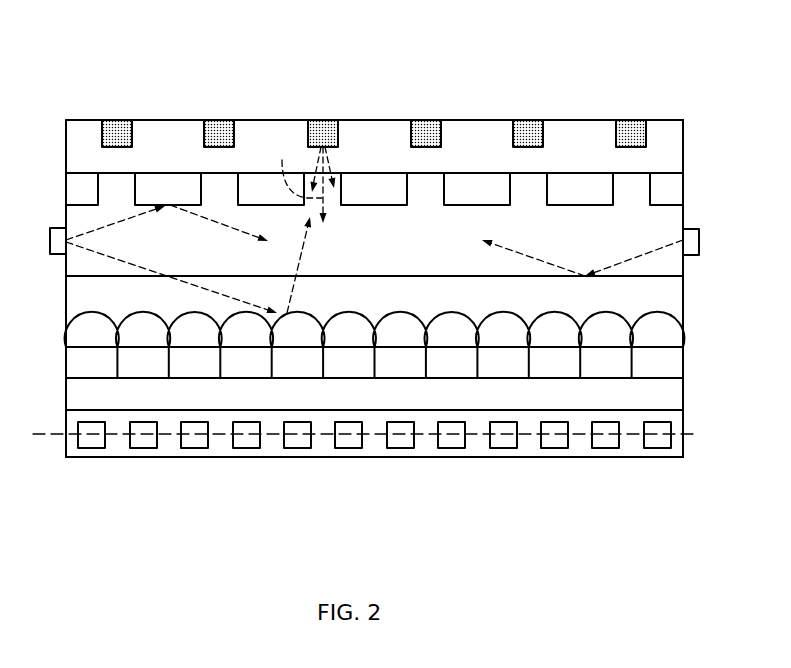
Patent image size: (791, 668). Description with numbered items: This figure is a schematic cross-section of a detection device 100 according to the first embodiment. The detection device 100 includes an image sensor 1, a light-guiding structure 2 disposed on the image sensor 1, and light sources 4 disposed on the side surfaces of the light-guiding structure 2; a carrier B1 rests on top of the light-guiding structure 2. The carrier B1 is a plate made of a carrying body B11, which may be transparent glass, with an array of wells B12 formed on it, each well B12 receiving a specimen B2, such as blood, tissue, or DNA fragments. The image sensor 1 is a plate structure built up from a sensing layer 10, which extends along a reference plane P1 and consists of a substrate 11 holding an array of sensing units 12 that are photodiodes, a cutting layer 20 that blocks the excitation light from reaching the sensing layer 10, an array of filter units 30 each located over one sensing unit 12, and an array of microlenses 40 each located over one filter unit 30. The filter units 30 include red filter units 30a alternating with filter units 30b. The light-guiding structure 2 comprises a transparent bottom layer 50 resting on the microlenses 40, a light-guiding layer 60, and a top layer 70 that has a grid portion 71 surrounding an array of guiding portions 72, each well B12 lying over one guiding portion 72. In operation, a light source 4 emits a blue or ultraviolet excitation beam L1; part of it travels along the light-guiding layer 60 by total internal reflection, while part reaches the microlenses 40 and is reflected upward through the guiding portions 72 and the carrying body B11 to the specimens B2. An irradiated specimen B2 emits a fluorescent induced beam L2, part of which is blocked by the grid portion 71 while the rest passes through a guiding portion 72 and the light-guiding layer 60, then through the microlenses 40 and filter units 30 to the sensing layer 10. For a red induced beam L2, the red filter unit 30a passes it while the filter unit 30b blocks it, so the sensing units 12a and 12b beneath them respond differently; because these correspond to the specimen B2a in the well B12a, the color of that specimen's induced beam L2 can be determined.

The detection device 100 is at (718, 39).
The image sensor 1 is at (702, 310).
The light-guiding structure 2 is at (702, 173).
The light source 4 is at (50, 243).
The sensing layer 10 is at (57, 452).
The substrate 11 is at (72, 420).
The sensing unit 12 is at (93, 448).
The sensing unit 12a is at (299, 448).
The sensing unit 12b is at (350, 448).
The cutting layer 20 is at (72, 393).
The filter unit 30 is at (72, 363).
The red filter unit 30a is at (284, 370).
The filter unit 30b is at (337, 370).
The microlens 40 is at (78, 333).
The bottom layer 50 is at (70, 297).
The light-guiding layer 60 is at (72, 215).
The top layer 70 is at (57, 189).
The grid portion 71 is at (82, 182).
The guiding portion 72 is at (330, 205).
The carrier B1 is at (698, 157).
The carrying body B11 is at (675, 131).
The well B12 is at (442, 132).
The well B12a is at (308, 133).
The specimen B2 is at (426, 124).
The specimen B2a is at (323, 124).
The excitation beam L1 is at (123, 221).
The induced beam L2 is at (314, 168).
The reference plane P1 is at (692, 445).